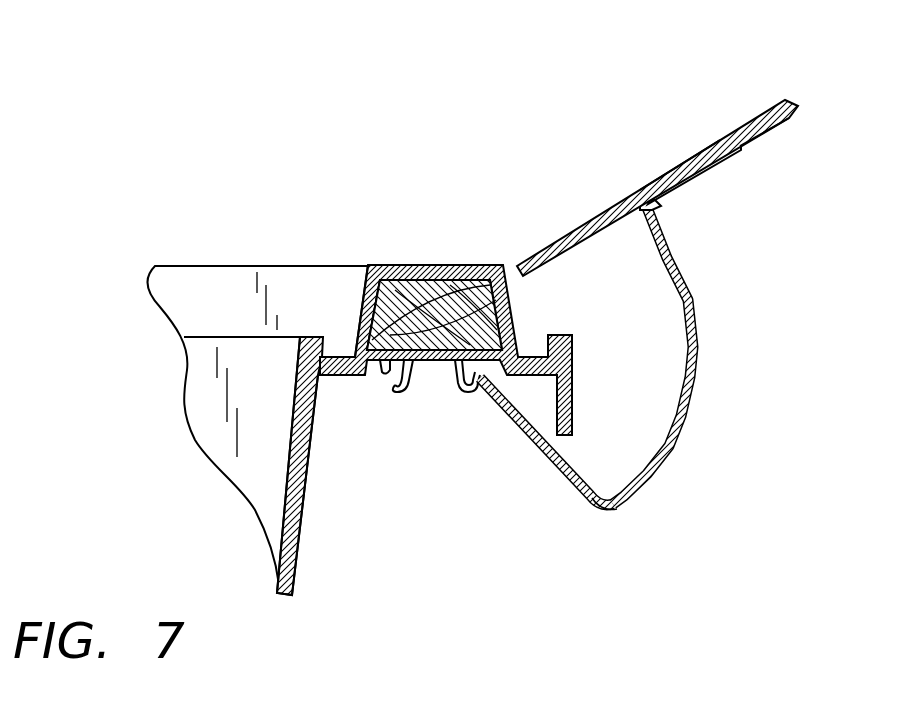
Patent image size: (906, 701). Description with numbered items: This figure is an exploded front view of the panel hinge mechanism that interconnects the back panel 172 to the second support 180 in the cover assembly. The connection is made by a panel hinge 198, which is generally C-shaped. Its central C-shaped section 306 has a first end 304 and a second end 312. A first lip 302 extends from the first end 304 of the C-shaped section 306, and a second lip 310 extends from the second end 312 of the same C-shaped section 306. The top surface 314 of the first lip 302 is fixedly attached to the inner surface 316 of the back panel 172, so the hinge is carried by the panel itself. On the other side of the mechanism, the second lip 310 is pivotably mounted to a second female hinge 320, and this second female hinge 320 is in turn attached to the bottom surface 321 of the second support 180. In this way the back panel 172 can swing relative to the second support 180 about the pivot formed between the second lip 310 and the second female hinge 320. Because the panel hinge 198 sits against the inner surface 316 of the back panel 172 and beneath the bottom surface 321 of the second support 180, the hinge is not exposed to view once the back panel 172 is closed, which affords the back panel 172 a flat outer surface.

The back panel 172 is at (767, 100).
The second support 180 is at (450, 265).
The panel hinge 198 is at (658, 465).
The first lip 302 is at (713, 173).
The first end 304 is at (660, 207).
The C-shaped section 306 is at (617, 512).
The second lip 310 is at (468, 393).
The second end 312 is at (477, 383).
The top surface 314 is at (680, 162).
The inner surface 316 is at (767, 126).
The second female hinge 320 is at (387, 265).
The bottom surface 321 is at (373, 372).